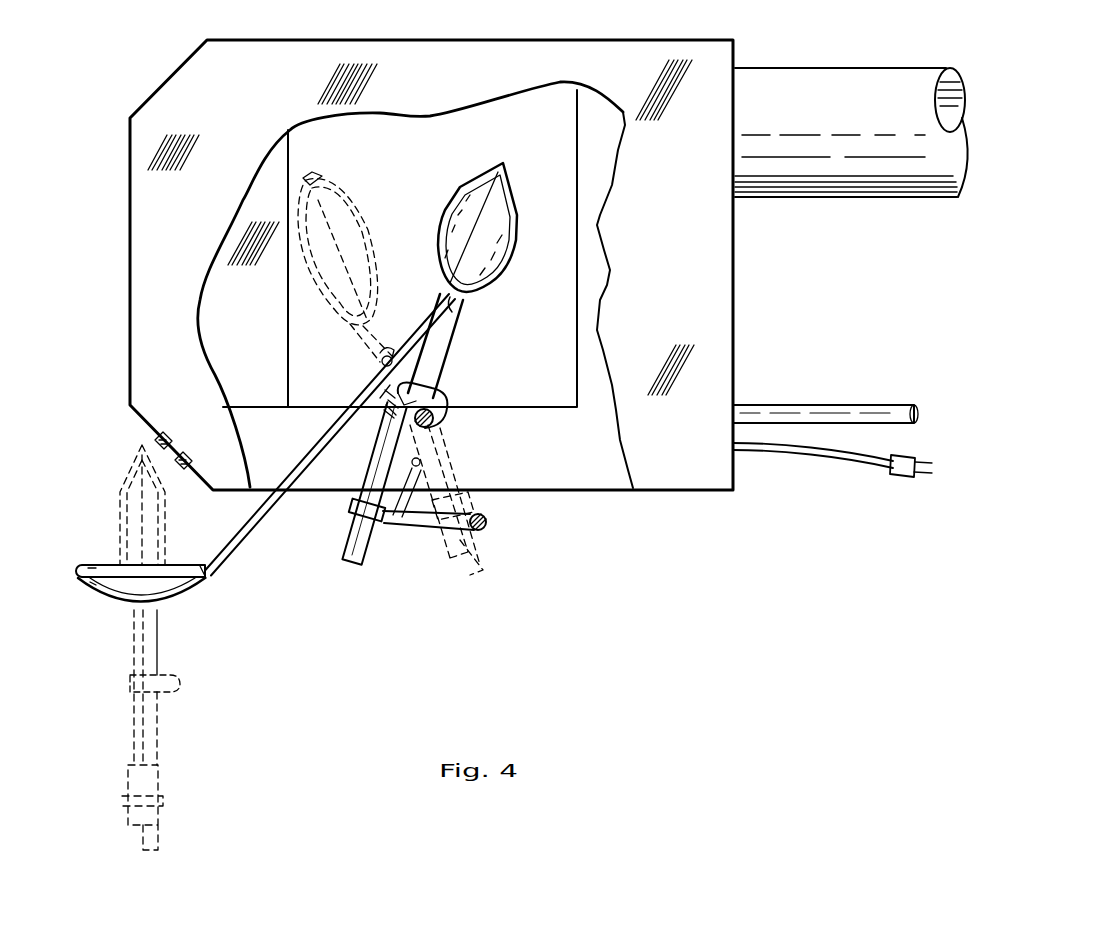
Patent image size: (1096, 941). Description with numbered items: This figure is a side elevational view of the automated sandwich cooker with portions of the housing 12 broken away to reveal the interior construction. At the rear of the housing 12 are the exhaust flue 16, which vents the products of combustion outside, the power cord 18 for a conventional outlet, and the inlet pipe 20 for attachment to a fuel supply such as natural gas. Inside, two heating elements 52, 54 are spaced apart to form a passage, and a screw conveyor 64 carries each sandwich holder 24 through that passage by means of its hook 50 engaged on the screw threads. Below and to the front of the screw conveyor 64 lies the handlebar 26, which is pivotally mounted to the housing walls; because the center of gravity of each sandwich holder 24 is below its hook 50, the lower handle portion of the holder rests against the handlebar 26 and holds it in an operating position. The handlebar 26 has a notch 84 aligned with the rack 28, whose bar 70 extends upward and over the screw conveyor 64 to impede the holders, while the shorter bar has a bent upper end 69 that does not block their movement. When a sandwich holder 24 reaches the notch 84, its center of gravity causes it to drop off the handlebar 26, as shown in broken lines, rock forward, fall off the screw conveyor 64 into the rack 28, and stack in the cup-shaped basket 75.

The housing 12 is at (388, 62).
The exhaust flue 16 is at (818, 95).
The power cord 18 is at (807, 462).
The inlet pipe 20 is at (815, 410).
The sandwich holder 24 is at (318, 180).
The handlebar 26 is at (380, 528).
The rack 28 is at (212, 576).
The hook 50 is at (440, 420).
The heating element 52 is at (595, 270).
The heating element 54 is at (222, 297).
The screw conveyor 64 is at (432, 426).
The bent upper end of bar 72 69 is at (356, 405).
The bar 70 is at (272, 508).
The cup-shaped basket 75 is at (92, 598).
The notch 84 is at (466, 515).